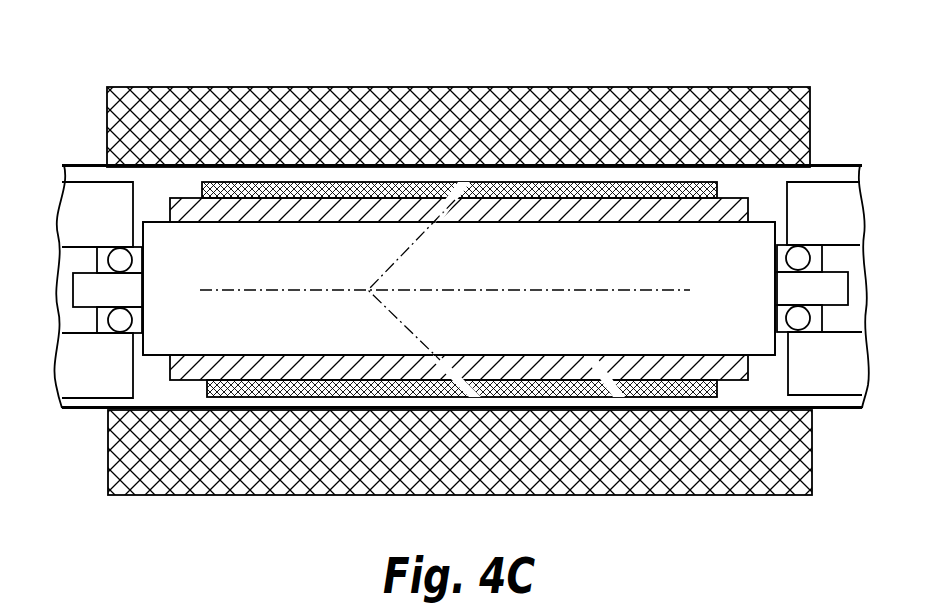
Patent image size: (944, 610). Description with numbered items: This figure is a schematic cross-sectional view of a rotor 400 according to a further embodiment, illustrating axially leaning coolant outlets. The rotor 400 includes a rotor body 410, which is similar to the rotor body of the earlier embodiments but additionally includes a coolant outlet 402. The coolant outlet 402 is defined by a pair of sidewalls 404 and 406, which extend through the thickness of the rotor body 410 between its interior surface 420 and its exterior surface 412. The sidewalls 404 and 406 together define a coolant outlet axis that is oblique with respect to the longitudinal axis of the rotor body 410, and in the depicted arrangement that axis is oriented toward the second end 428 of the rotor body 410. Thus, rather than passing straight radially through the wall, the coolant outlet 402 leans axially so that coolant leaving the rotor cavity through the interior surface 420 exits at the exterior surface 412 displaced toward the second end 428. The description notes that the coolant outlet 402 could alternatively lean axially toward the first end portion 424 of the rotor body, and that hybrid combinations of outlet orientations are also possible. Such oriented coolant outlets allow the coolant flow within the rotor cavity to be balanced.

The rotor 400 is at (165, 72).
The coolant outlet 402 is at (482, 165).
The sidewall 404 is at (472, 203).
The sidewall 406 is at (438, 217).
The rotor body 410 is at (178, 192).
The exterior surface 412 is at (282, 198).
The interior surface 420 is at (247, 230).
The first end portion 424 is at (210, 346).
The second end 428 is at (748, 258).